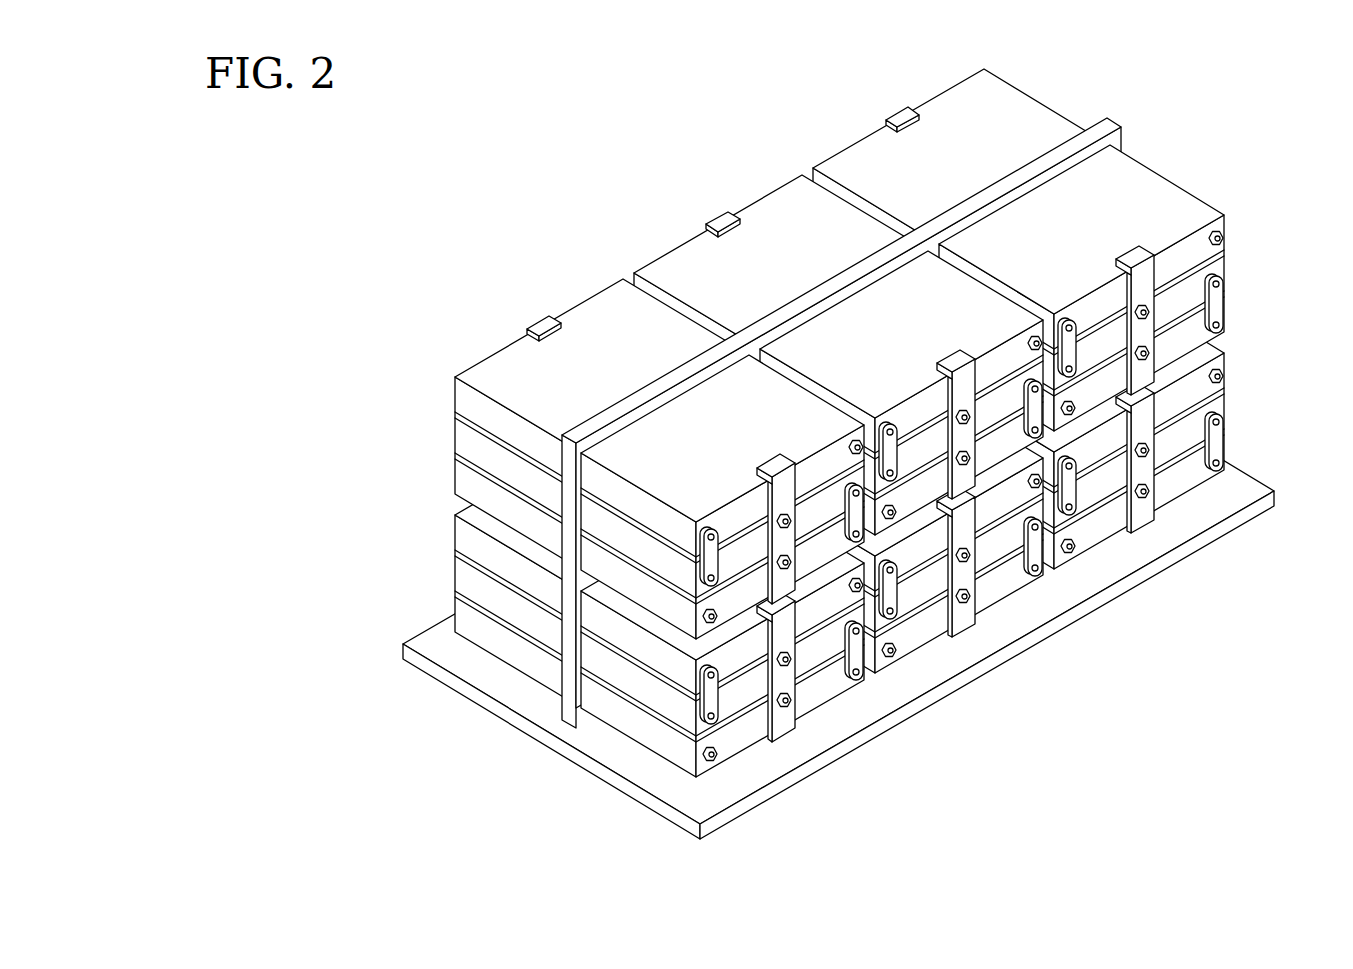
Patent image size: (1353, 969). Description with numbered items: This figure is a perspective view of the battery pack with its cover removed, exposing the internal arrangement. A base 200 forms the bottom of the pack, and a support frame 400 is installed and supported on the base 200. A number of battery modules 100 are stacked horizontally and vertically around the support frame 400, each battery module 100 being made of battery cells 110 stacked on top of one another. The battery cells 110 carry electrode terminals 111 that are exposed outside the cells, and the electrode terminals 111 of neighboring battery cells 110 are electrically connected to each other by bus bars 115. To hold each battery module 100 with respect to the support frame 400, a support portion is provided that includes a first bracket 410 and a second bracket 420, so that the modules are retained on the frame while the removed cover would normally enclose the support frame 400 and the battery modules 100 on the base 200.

The battery module 100 is at (1131, 357).
The battery cell 110 is at (1188, 208).
The electrode terminal 111 is at (717, 532).
The bus bar 115 is at (1226, 302).
The base 200 is at (530, 728).
The support frame 400 is at (642, 398).
The first bracket 410 is at (543, 327).
The second bracket 420 is at (1140, 258).